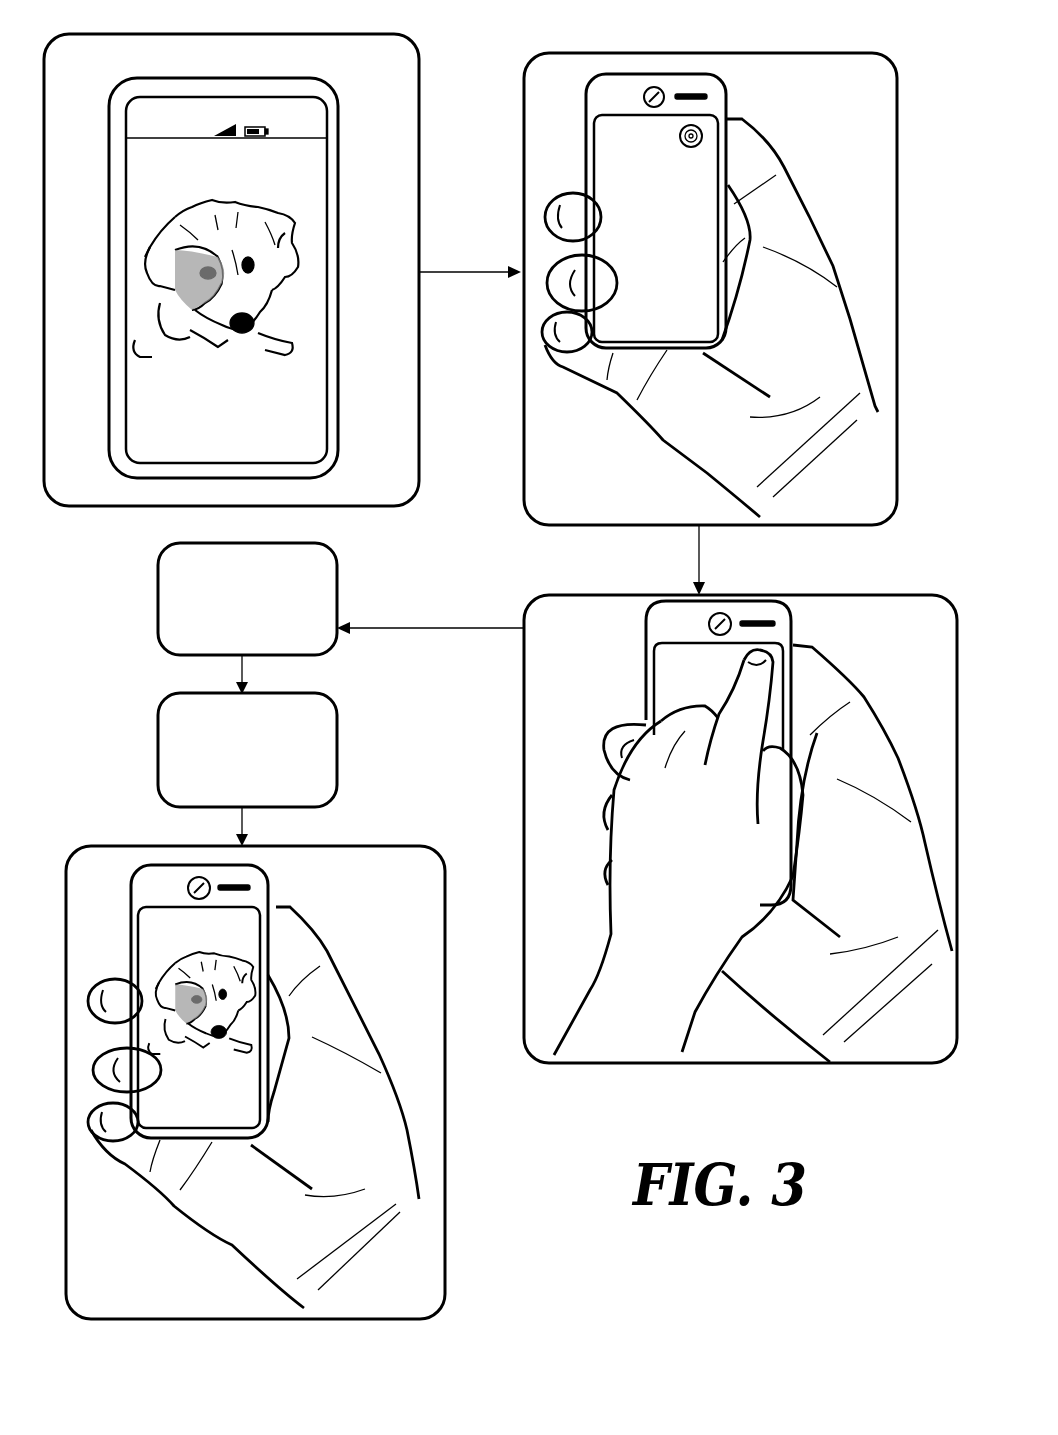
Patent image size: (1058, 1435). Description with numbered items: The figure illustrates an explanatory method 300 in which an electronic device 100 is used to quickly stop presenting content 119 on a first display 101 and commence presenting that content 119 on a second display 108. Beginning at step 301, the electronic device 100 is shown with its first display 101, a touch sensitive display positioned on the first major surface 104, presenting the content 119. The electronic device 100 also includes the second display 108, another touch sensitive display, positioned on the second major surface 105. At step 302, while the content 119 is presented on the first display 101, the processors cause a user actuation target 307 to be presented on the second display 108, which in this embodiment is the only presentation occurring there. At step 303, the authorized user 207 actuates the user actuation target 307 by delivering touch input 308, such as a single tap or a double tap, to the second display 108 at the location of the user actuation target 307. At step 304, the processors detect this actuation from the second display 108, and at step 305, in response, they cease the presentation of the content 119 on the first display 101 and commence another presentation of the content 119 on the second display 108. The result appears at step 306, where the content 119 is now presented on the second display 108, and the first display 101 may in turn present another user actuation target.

The electronic device 100 is at (89, 102).
The first display 101 is at (154, 407).
The first major surface 104 is at (331, 388).
The second major surface 105 is at (215, 1138).
The second display 108 is at (675, 319).
The content 119 is at (126, 224).
The authorized user 207 is at (736, 455).
The method 300 is at (730, 40).
The step 301 is at (420, 142).
The step 302 is at (897, 330).
The step 303 is at (839, 590).
The step 304 is at (157, 598).
The step 305 is at (157, 748).
The step 306 is at (443, 1147).
The user actuation target 307 is at (695, 150).
The touch input 308 is at (777, 637).